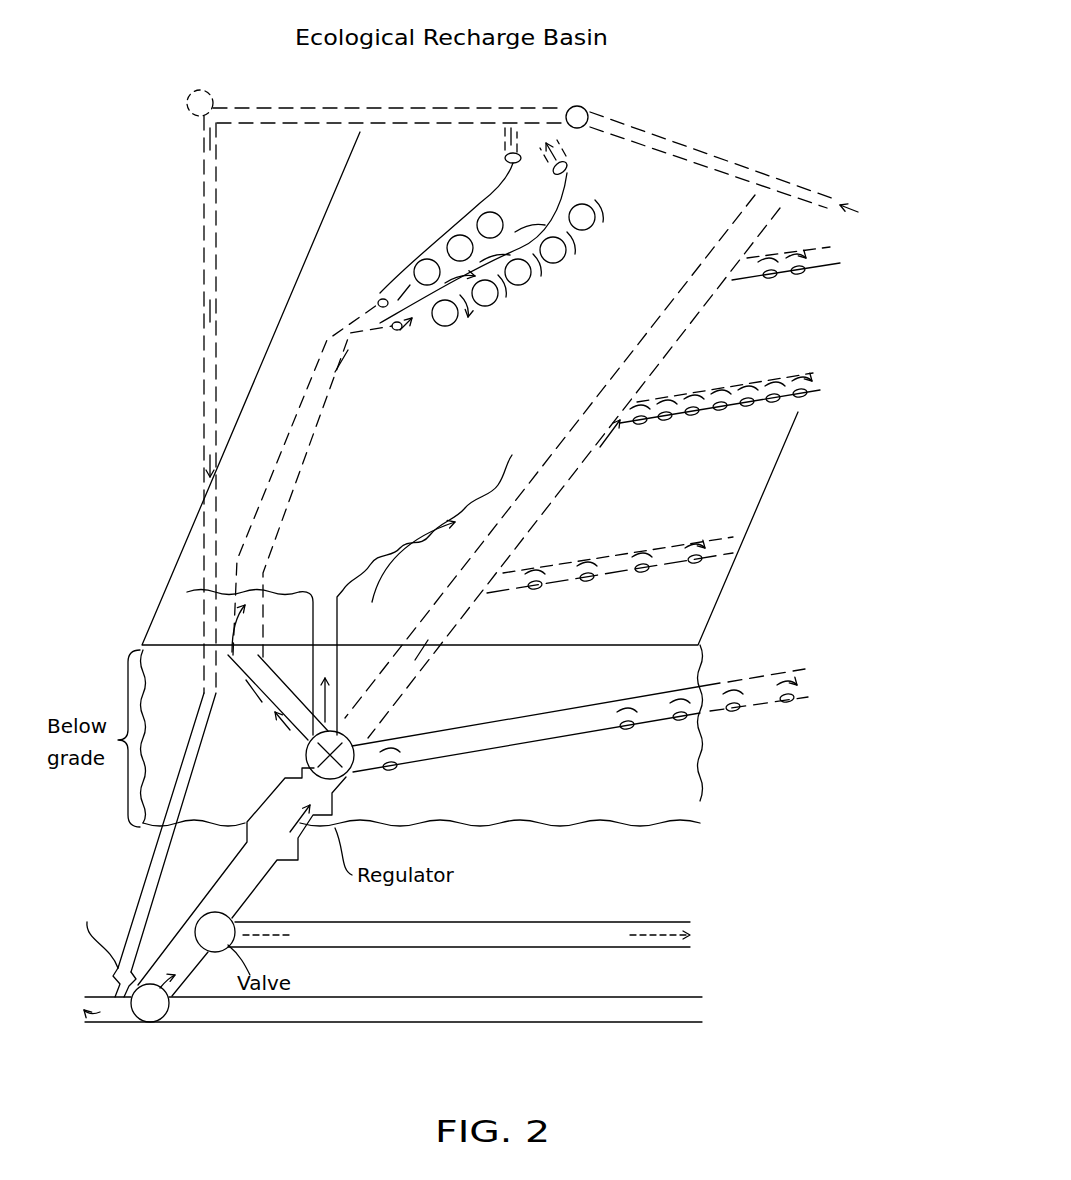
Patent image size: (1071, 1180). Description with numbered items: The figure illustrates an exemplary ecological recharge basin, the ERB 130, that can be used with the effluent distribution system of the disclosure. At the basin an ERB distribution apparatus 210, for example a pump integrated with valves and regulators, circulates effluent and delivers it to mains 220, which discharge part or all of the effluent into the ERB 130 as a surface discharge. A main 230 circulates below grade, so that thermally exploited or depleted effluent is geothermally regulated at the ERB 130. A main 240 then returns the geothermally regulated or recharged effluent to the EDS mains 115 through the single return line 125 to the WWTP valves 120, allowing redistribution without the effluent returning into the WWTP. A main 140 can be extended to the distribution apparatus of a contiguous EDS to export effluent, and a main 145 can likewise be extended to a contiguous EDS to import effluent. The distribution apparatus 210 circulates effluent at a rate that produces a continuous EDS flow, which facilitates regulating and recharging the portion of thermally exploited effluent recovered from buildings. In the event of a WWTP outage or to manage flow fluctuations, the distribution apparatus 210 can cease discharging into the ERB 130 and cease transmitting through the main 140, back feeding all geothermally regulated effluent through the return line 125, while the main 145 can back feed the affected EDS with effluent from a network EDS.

The EDS main 115 is at (265, 1013).
The WWTP valve 120 is at (583, 128).
The single return line 125 is at (205, 385).
The ecological recharge basin 130 is at (162, 247).
The main 140 is at (568, 922).
The main 145 is at (698, 165).
The ERB distribution apparatus 210 is at (370, 777).
The main 220 is at (423, 628).
The main 230 is at (337, 393).
The main 240 is at (385, 108).